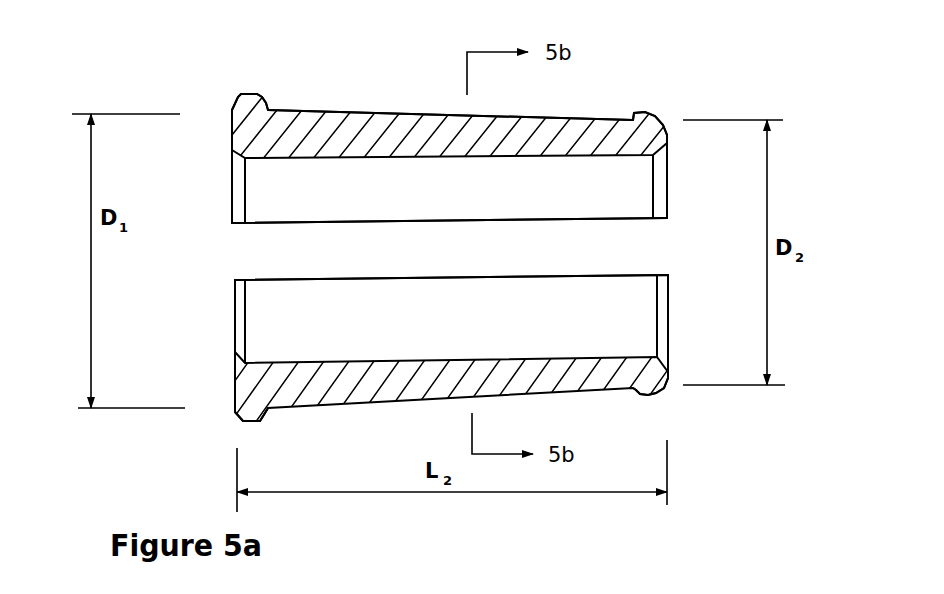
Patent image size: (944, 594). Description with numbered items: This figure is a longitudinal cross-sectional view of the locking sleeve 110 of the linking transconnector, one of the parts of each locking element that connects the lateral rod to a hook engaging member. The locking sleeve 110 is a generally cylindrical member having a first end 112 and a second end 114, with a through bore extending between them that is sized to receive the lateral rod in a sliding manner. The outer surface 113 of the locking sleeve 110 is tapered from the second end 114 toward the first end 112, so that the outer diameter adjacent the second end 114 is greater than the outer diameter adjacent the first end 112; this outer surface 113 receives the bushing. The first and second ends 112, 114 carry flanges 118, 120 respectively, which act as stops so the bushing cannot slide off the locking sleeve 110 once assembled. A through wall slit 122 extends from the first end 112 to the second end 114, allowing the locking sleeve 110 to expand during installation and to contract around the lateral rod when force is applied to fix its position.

The locking sleeve 110 is at (357, 85).
The first end 112 is at (652, 113).
The outer surface 113 is at (434, 97).
The second end 114 is at (238, 97).
The flange 118 is at (658, 393).
The flange 120 is at (240, 410).
The through wall slit 122 is at (250, 258).